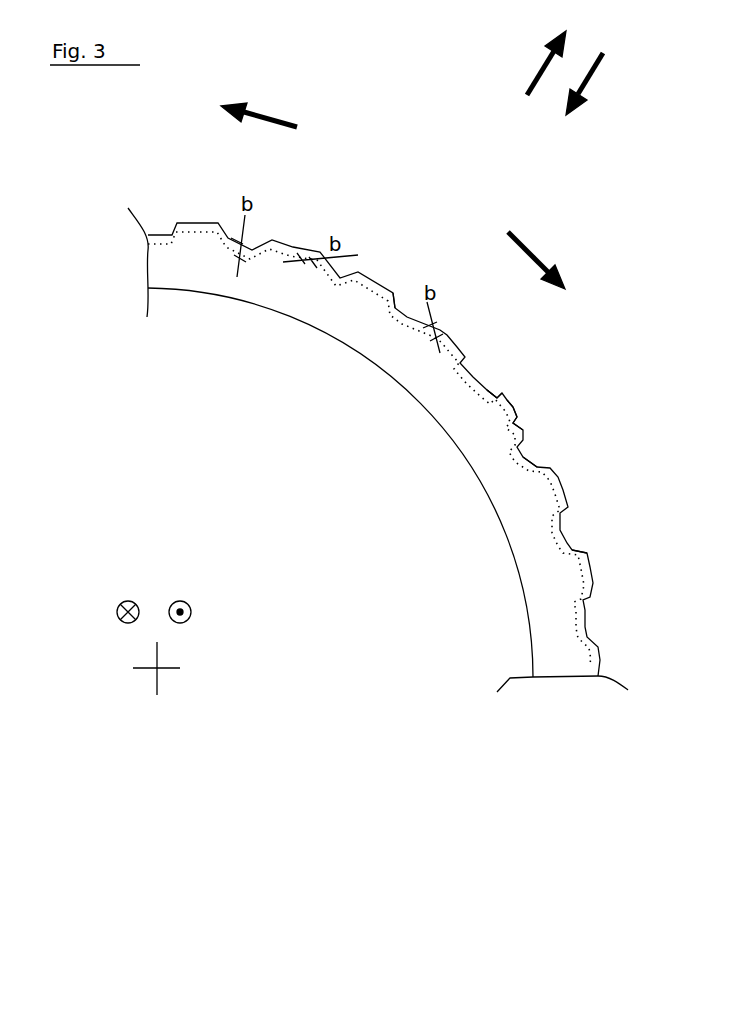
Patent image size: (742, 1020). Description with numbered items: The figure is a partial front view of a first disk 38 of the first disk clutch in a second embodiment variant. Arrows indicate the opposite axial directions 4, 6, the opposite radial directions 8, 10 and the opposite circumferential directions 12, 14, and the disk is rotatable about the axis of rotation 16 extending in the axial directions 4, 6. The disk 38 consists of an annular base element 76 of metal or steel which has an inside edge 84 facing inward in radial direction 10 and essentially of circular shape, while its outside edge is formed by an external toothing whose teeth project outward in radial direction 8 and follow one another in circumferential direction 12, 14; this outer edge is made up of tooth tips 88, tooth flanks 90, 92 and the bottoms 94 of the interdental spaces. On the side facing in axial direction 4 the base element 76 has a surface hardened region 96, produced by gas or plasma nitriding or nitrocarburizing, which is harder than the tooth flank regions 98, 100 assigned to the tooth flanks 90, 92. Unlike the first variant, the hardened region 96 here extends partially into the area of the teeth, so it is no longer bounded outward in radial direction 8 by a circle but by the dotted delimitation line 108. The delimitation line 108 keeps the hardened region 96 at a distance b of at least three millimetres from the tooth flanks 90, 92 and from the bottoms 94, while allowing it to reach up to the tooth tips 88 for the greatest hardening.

The axial direction 4 is at (188, 618).
The axial direction 6 is at (115, 615).
The radial direction 8 is at (532, 73).
The radial direction 10 is at (592, 80).
The circumferential direction 12 is at (527, 243).
The circumferential direction 14 is at (278, 117).
The axis of rotation 16 is at (157, 668).
The first disk 38 is at (142, 168).
The annular base element 76 is at (519, 633).
The inside edge 84 is at (316, 340).
The tooth tips 88 is at (515, 405).
The tooth flank 90 is at (495, 382).
The tooth flank 92 is at (524, 428).
The bottoms of interdental spaces 94 is at (407, 315).
The hardened region 96 is at (545, 560).
The tooth flank region 98 is at (497, 393).
The tooth flank region 100 is at (517, 416).
The delimitation line 108 is at (523, 473).